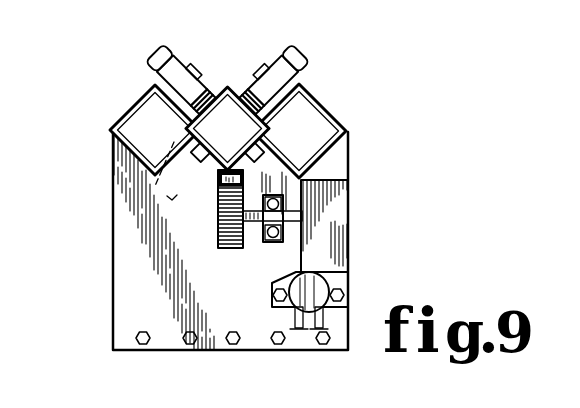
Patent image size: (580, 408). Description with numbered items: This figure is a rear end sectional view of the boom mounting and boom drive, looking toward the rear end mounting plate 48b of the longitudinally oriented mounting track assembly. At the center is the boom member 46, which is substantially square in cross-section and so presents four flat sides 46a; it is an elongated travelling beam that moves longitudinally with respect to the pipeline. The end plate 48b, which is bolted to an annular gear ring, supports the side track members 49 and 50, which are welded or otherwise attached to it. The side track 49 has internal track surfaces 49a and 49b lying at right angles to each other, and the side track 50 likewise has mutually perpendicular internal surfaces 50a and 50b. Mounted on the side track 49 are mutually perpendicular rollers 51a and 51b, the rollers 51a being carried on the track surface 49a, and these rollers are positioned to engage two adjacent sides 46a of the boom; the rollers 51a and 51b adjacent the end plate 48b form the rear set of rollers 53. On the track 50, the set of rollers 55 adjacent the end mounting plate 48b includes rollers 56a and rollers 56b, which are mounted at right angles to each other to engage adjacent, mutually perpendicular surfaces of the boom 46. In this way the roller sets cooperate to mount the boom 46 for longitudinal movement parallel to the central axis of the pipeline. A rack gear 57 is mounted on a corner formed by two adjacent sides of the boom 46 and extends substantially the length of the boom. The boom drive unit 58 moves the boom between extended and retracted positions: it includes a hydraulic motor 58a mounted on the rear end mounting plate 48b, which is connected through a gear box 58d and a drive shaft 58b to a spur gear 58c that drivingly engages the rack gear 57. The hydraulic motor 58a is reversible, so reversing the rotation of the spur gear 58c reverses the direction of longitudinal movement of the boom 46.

The boom member 46 is at (246, 141).
The flat sides 46a is at (227, 87).
The end plate 48b is at (113, 268).
The side track 49 is at (133, 107).
The internal track surface 49a is at (157, 70).
The internal track surface 49b is at (155, 180).
The side track 50 is at (322, 100).
The internal surface 50a is at (292, 80).
The internal surface 50b is at (347, 133).
The rollers 51a is at (163, 64).
The rollers 51b is at (161, 186).
The rear set of rollers 53 is at (223, 112).
The set of rollers 55 is at (238, 112).
The rollers 56a is at (290, 62).
The rollers 56b is at (286, 195).
The rack gear 57 is at (218, 183).
The boom drive unit 58 is at (300, 249).
The hydraulic motor 58a is at (330, 293).
The drive shaft 58b is at (262, 242).
The spur gear 58c is at (227, 248).
The gear box 58d is at (332, 217).